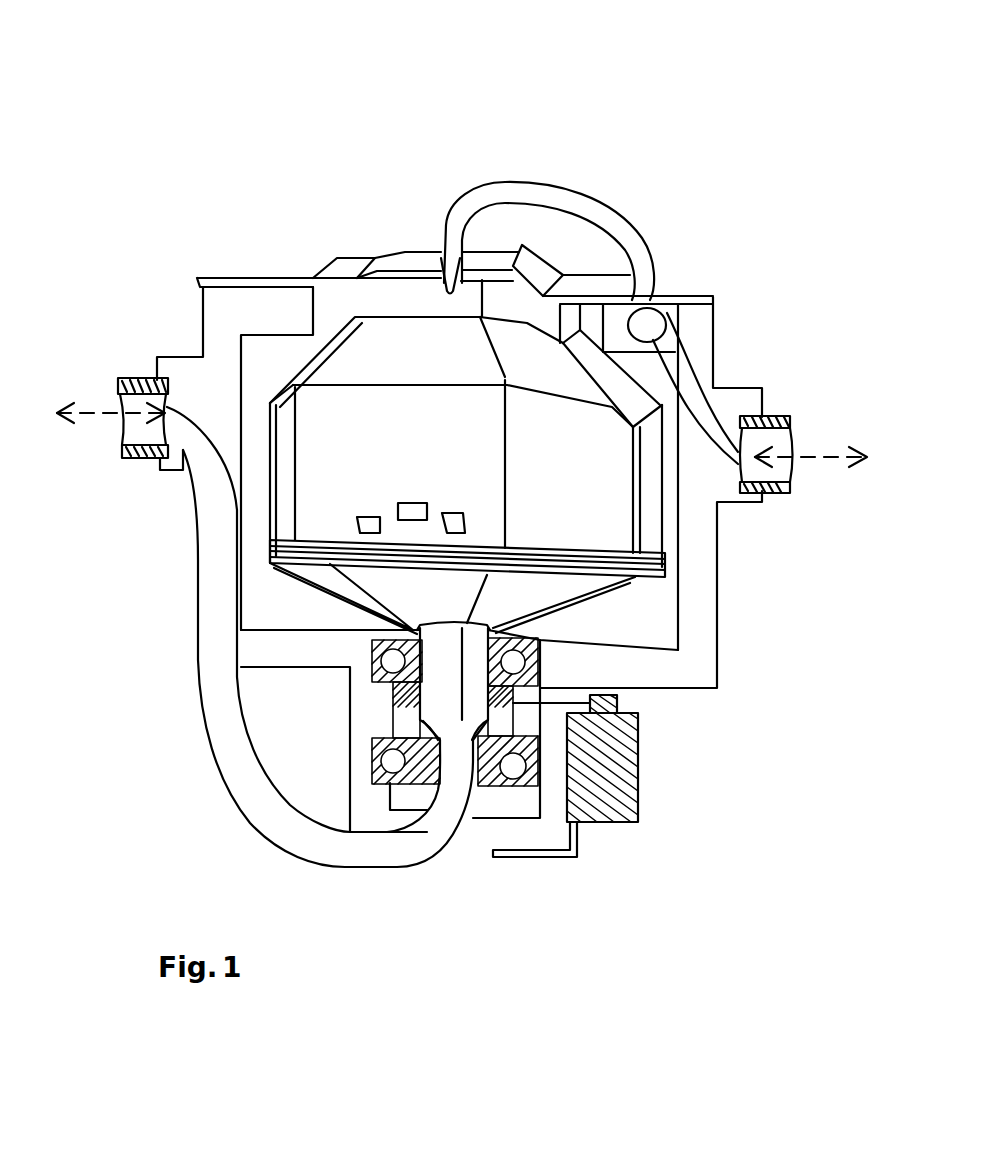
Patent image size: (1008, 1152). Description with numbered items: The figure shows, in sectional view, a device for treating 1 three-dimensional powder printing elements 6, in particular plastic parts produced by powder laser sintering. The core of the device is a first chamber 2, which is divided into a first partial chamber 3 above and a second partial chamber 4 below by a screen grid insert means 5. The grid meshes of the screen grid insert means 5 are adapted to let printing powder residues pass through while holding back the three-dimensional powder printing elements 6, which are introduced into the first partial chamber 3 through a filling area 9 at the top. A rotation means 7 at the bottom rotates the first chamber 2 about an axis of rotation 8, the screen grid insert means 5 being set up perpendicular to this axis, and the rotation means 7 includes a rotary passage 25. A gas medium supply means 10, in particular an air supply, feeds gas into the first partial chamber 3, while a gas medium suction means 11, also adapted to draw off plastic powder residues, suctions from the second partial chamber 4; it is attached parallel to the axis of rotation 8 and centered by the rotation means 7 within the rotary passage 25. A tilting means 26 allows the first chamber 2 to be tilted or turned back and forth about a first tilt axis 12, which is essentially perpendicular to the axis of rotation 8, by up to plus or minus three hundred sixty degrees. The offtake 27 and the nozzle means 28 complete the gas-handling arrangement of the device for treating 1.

The device for treating 1 is at (364, 138).
The first chamber 2 is at (562, 115).
The first partial chamber 3 is at (376, 453).
The second partial chamber 4 is at (419, 608).
The screen grid insert means 5 is at (520, 538).
The 3D powder printing elements 6 is at (474, 504).
The rotation means 7 is at (603, 851).
The axis of rotation 8 is at (455, 917).
The filling area 9 is at (438, 159).
The gas medium supply means 10 is at (607, 201).
The gas medium suction means 11 is at (161, 318).
The tilt axis 12 is at (97, 412).
The rotary passage 25 is at (378, 765).
The tilting means 26 is at (822, 385).
The offtake 27 is at (112, 497).
The nozzle means 28 is at (421, 242).